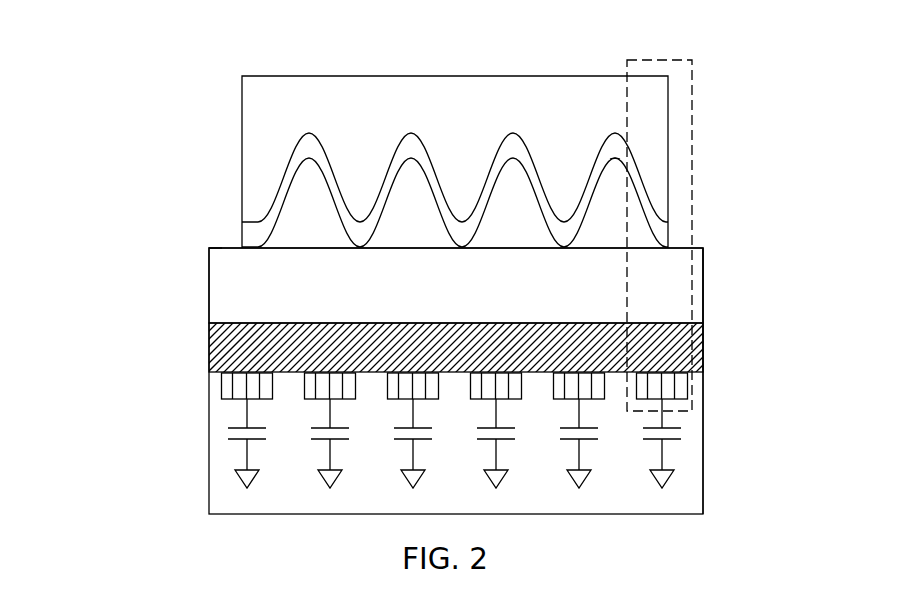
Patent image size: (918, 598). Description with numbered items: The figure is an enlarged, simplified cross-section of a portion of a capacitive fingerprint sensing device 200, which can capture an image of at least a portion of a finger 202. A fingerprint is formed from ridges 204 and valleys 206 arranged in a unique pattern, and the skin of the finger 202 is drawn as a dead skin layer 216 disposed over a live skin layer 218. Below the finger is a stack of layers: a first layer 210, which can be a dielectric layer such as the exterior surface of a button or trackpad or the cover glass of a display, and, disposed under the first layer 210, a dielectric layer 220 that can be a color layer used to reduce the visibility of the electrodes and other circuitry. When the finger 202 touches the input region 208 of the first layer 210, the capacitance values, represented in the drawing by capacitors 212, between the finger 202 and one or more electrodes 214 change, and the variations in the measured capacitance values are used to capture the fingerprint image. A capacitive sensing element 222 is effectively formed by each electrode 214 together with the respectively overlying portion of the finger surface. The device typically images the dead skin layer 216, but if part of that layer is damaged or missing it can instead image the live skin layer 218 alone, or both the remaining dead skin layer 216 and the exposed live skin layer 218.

The capacitive fingerprint sensing device 200 is at (128, 262).
The finger 202 is at (283, 96).
The ridges 204 is at (209, 248).
The valleys 206 is at (630, 160).
The input region 208 is at (702, 248).
The first layer 210 is at (703, 285).
The capacitors 212 is at (227, 432).
The electrodes 214 is at (221, 388).
The dead skin layer 216 is at (276, 230).
The live skin layer 218 is at (312, 143).
The dielectric layer 220 is at (703, 350).
The capacitive sensing element 222 is at (645, 60).